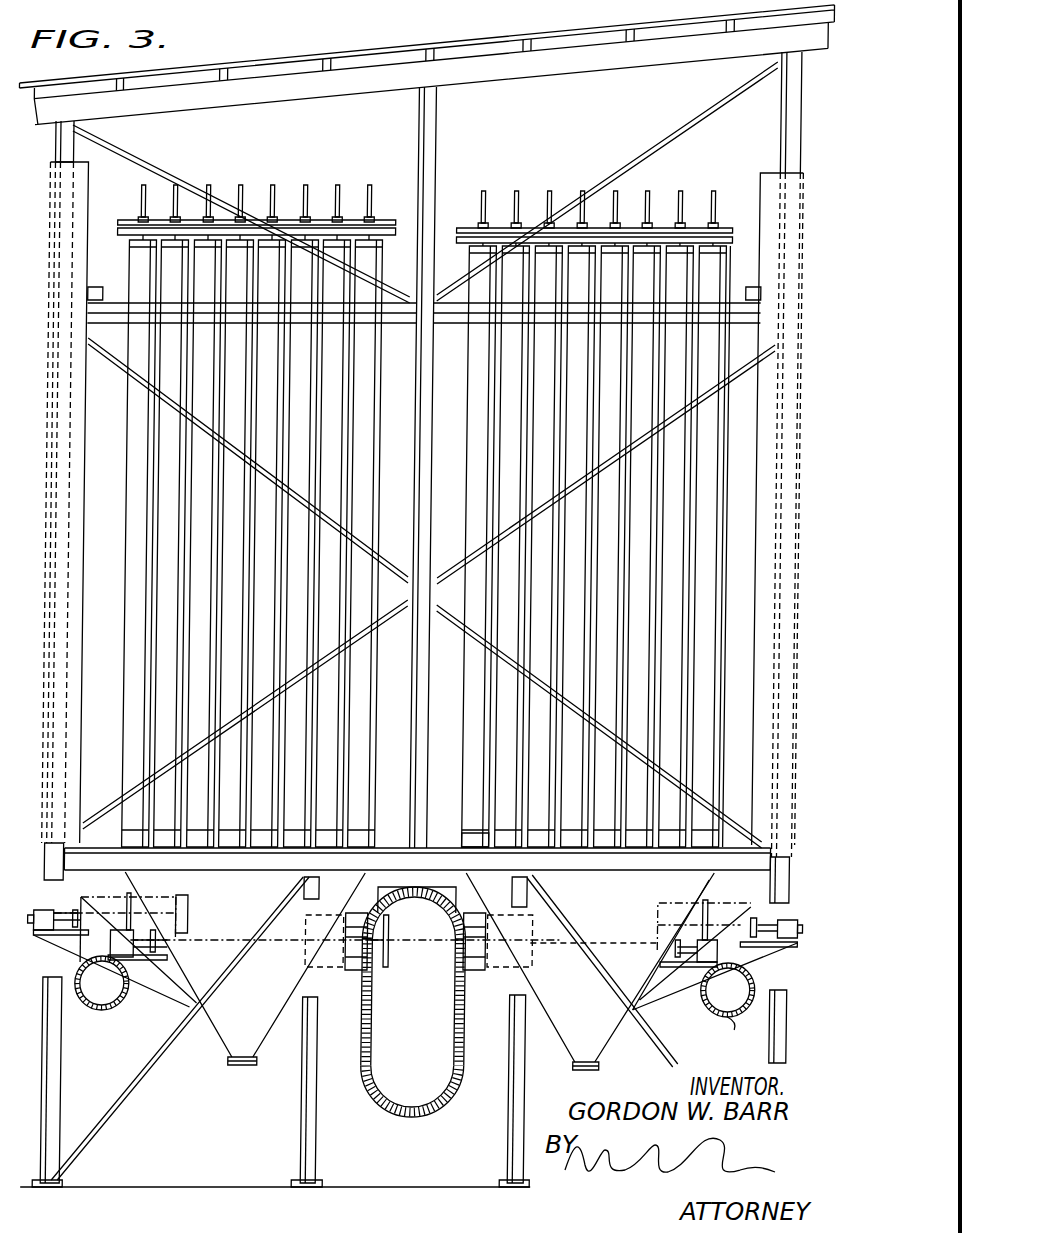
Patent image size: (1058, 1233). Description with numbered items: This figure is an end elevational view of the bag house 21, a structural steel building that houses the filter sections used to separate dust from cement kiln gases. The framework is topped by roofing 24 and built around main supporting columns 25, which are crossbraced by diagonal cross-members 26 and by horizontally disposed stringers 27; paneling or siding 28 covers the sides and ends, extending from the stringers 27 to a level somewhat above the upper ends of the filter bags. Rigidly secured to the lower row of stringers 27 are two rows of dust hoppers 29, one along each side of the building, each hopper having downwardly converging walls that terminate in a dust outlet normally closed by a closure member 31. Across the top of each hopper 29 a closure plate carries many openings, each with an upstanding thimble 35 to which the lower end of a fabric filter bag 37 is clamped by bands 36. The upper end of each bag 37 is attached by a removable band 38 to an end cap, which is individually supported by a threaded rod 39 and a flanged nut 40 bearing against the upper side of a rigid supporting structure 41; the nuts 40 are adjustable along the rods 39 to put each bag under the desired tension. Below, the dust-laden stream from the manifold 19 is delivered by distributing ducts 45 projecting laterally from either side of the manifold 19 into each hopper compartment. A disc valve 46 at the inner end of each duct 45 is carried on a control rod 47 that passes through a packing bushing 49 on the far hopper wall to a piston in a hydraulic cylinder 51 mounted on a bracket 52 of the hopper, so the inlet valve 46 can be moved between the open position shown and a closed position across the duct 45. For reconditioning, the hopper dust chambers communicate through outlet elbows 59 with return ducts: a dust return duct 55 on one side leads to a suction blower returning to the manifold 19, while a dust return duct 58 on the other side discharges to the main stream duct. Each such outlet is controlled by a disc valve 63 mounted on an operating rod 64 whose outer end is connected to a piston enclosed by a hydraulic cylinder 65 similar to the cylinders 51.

The manifold 19 is at (428, 1120).
The bag house 21 is at (264, 52).
The roofing 24 is at (470, 22).
The main supporting columns 25 is at (437, 125).
The cross-members 26 is at (685, 128).
The stringers 27 is at (762, 312).
The paneling or siding 28 is at (118, 188).
The dust hoppers 29 is at (226, 1030).
The closure member 31 is at (258, 1066).
The thimble 35 is at (271, 845).
The bands 36 is at (480, 830).
The fabric filter bag 37 is at (172, 508).
The removable band 38 is at (135, 256).
The threaded rods 39 is at (369, 195).
The flanged nuts 40 is at (175, 215).
The rigid supporting structure 41 is at (396, 228).
The distributing duct 45 is at (362, 967).
The disc valve 46 is at (450, 945).
The control rod 47 is at (280, 945).
The packing bushing 49 is at (178, 950).
The hydraulic cylinder 51 is at (128, 942).
The bracket 52 is at (158, 960).
The dust return duct 55 is at (113, 1008).
The dust return duct 58 is at (745, 1025).
The outlet elbows 59 is at (138, 895).
The disc valve 63 is at (199, 930).
The operating rod 64 is at (84, 912).
The hydraulic cylinder 65 is at (56, 910).